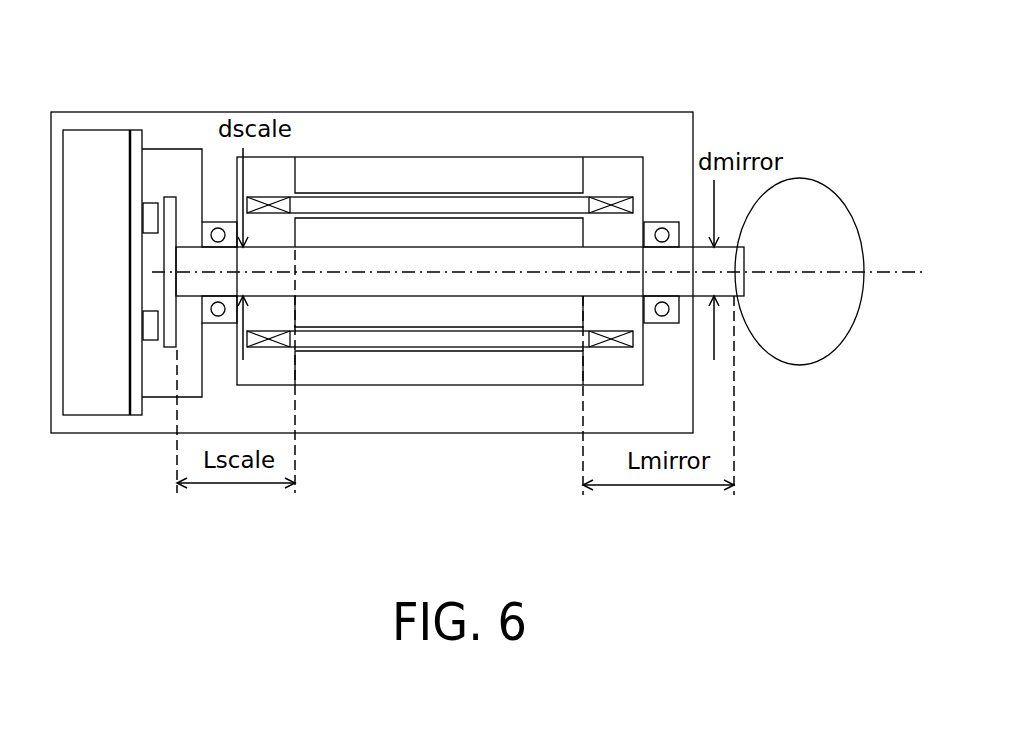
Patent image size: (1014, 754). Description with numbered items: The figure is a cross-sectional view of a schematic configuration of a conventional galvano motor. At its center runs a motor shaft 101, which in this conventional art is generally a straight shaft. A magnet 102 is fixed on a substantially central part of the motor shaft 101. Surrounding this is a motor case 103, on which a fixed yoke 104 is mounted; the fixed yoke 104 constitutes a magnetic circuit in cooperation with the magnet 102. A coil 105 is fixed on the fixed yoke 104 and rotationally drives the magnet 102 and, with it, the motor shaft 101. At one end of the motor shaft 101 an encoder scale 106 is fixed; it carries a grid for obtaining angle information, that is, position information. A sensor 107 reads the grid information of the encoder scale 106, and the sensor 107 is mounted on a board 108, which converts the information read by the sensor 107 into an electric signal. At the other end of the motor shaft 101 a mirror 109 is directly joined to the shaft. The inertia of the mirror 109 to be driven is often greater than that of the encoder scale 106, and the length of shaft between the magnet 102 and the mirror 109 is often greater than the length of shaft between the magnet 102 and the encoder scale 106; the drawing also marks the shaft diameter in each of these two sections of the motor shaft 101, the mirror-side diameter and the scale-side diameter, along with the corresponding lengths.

The motor shaft 101 is at (522, 258).
The magnet 102 is at (405, 234).
The motor case 103 is at (458, 124).
The fixed yoke 104 is at (489, 173).
The coil 105 is at (627, 205).
The encoder scale 106 is at (170, 212).
The sensor 107 is at (150, 210).
The board 108 is at (137, 183).
The mirror 109 is at (799, 193).